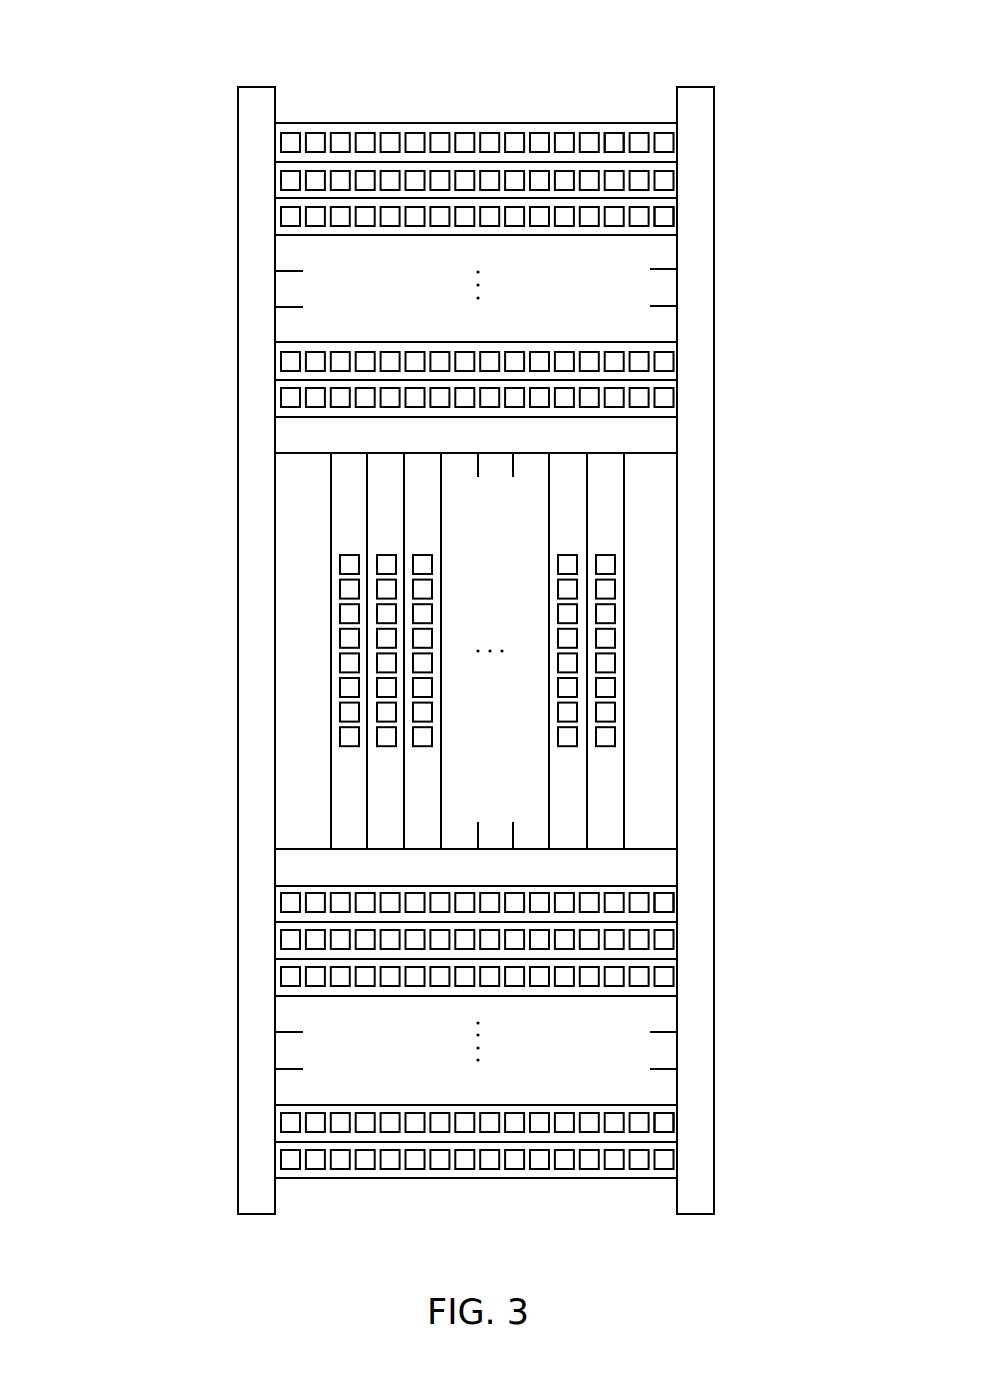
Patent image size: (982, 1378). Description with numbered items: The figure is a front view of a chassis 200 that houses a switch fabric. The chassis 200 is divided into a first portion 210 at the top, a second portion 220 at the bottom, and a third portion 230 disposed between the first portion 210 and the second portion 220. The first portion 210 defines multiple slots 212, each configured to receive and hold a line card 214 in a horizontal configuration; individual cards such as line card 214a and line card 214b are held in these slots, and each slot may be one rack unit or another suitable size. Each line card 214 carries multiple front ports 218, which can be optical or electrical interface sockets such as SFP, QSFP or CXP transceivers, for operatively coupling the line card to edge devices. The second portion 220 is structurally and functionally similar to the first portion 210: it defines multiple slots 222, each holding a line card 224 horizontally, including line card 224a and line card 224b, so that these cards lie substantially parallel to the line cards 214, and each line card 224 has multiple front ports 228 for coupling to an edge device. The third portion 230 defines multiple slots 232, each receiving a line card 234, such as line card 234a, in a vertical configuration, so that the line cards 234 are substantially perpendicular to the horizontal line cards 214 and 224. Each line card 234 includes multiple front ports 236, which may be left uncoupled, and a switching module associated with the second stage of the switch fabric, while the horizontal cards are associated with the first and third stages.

The chassis 200 is at (175, 60).
The first portion 210 is at (472, 219).
The slot 212 is at (388, 123).
The line card 214 is at (668, 350).
The line card 214a is at (285, 155).
The line card 214b is at (297, 413).
The front port 218 is at (617, 140).
The second portion 220 is at (472, 1077).
The slot 222 is at (275, 967).
The line card 224 is at (660, 955).
The line card 224a is at (275, 889).
The line card 224b is at (672, 1174).
The front port 228 is at (667, 903).
The third portion 230 is at (475, 651).
The slot 232 is at (624, 470).
The line card 234 is at (615, 525).
The line card 234a is at (350, 500).
The front port 236 is at (345, 563).